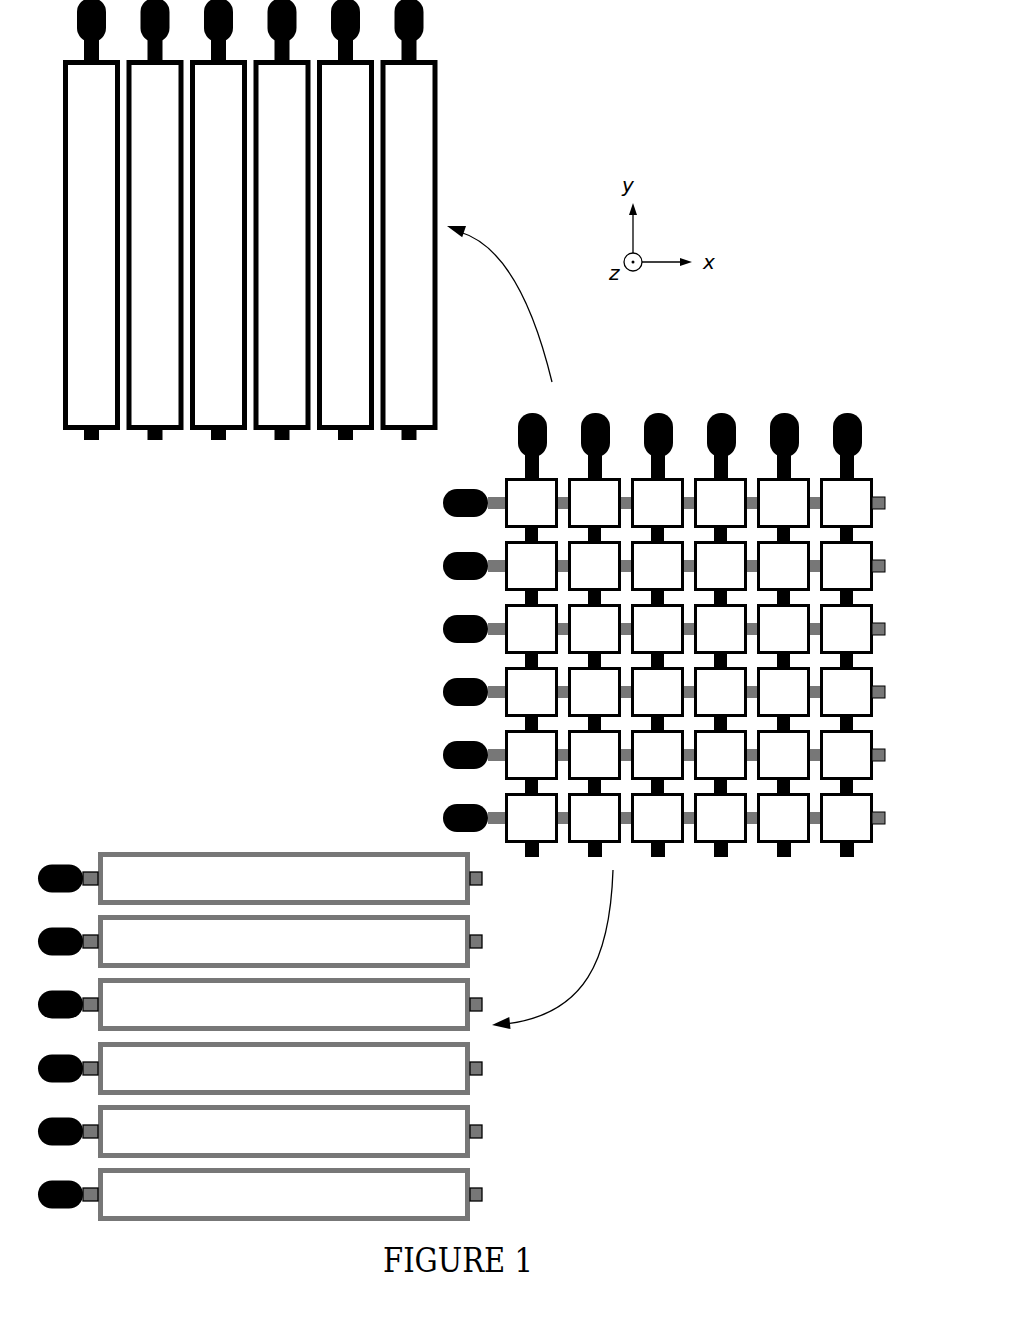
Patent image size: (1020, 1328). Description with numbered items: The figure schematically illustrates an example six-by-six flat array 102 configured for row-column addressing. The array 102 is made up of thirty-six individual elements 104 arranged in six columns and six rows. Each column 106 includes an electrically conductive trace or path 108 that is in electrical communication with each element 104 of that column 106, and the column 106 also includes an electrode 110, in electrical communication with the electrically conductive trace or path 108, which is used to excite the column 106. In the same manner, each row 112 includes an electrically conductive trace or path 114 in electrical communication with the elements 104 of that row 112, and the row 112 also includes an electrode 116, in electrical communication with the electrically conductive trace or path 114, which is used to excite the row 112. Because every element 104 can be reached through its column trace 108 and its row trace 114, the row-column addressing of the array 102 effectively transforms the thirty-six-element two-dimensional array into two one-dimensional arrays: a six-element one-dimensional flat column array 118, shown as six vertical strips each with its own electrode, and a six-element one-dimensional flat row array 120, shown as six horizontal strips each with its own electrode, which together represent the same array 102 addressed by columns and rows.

The flat array 102 is at (624, 678).
The element 104 is at (676, 830).
The column 106 is at (681, 888).
The electrically conductive trace or path 108 is at (657, 857).
The electrode 110 is at (662, 414).
The row 112 is at (468, 656).
The electrically conductive trace or path 114 is at (521, 620).
The electrode 116 is at (443, 624).
The flat column array 118 is at (478, 118).
The flat row array 120 is at (530, 1104).